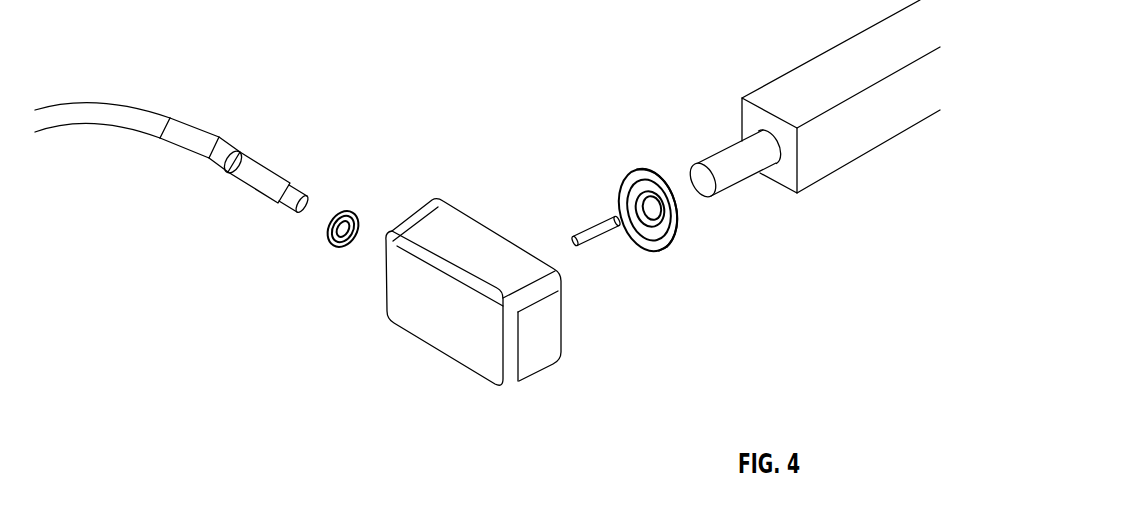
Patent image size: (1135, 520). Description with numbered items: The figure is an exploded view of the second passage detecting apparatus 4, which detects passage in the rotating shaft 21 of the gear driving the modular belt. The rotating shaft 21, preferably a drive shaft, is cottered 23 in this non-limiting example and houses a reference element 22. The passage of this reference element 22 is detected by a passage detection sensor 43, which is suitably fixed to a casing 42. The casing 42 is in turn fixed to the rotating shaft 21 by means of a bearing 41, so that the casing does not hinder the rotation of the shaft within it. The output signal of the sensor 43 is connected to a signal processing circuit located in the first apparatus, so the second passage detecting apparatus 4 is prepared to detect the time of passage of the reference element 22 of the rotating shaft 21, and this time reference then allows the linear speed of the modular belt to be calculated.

The second passage detecting apparatus 4 is at (468, 138).
The rotating shaft 21 is at (730, 173).
The reference element 22 is at (590, 220).
The cotter 23 is at (723, 147).
The bearing 41 is at (650, 252).
The casing 42 is at (467, 330).
The passage detection sensor 43 is at (218, 130).